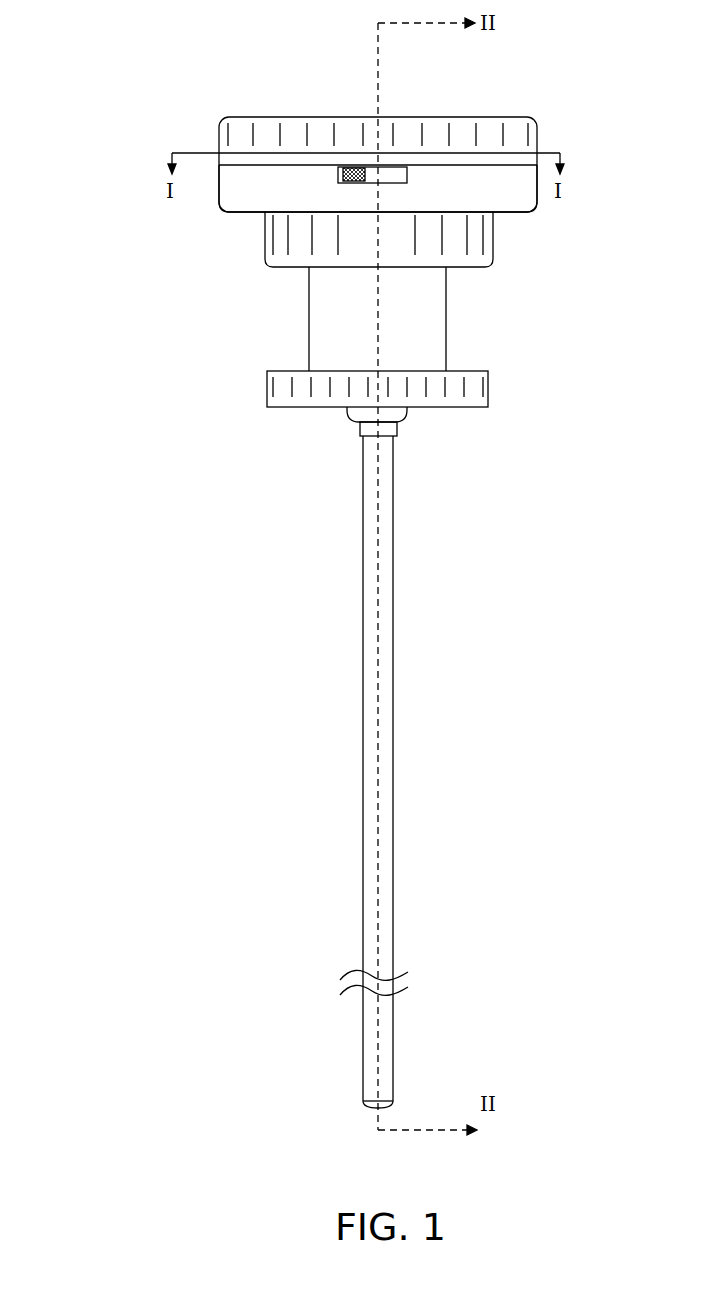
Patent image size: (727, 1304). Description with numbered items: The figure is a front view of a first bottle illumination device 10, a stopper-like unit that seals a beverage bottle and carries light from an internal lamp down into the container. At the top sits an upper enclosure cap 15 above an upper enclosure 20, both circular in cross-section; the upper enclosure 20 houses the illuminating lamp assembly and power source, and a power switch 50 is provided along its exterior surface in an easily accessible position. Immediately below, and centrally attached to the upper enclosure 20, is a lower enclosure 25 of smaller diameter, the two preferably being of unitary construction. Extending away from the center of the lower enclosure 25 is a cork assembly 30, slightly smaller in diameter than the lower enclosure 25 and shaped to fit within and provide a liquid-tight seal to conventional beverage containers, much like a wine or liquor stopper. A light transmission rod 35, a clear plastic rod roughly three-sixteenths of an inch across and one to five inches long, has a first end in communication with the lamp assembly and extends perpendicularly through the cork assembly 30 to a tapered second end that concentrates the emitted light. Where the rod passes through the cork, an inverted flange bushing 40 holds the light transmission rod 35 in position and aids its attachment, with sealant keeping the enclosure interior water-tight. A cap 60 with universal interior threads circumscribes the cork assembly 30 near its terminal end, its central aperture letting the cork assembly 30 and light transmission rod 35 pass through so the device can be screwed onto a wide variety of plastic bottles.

The first bottle illumination device 10 is at (180, 1017).
The upper enclosure cap 15 is at (537, 130).
The upper enclosure 20 is at (537, 187).
The lower enclosure 25 is at (493, 247).
The cork assembly 30 is at (443, 352).
The light transmission rod 35 is at (393, 605).
The inverted flange bushing 40 is at (397, 430).
The power switch 50 is at (357, 184).
The cap 60 is at (472, 392).